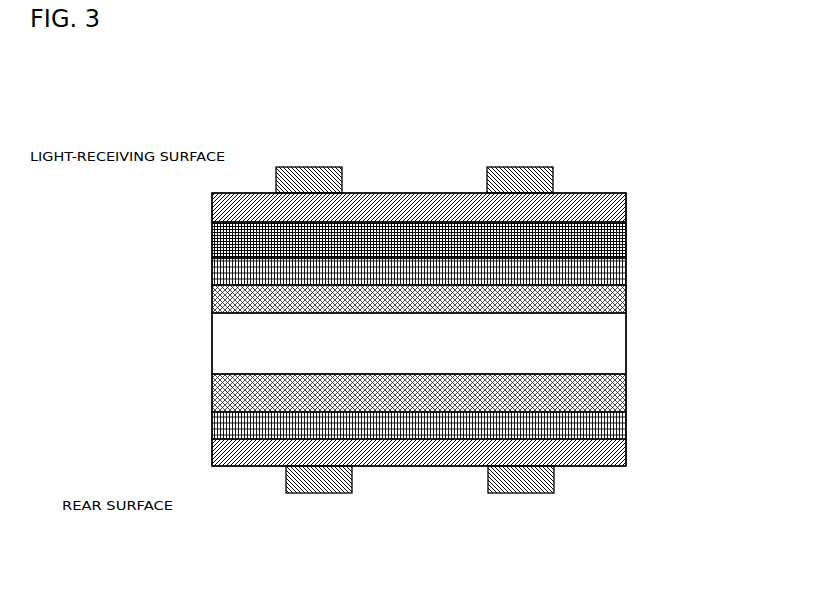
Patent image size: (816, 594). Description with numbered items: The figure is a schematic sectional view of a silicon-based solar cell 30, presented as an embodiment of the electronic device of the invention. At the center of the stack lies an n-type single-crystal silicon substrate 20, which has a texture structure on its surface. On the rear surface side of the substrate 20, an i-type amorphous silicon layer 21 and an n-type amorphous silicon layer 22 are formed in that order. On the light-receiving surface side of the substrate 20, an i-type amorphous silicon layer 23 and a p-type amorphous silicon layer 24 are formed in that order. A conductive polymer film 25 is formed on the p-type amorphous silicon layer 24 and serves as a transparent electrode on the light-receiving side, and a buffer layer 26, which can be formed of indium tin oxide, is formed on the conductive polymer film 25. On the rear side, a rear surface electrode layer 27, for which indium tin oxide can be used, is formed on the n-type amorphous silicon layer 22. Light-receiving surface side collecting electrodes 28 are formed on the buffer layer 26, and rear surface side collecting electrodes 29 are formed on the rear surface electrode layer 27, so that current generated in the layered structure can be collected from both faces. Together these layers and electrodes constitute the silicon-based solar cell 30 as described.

The n-type single-crystal silicon substrate 20 is at (617, 345).
The i-type amorphous silicon layer 21 is at (617, 392).
The n-type amorphous silicon layer 22 is at (626, 420).
The i-type amorphous silicon layer 23 is at (617, 303).
The p-type amorphous silicon layer 24 is at (626, 268).
The conductive polymer film 25 is at (617, 240).
The buffer layer 26 is at (617, 212).
The rear surface electrode layer 27 is at (626, 448).
The light-receiving surface side collecting electrodes 28 is at (323, 167).
The rear surface side collecting electrodes 29 is at (317, 493).
The silicon-based solar cell 30 is at (441, 148).